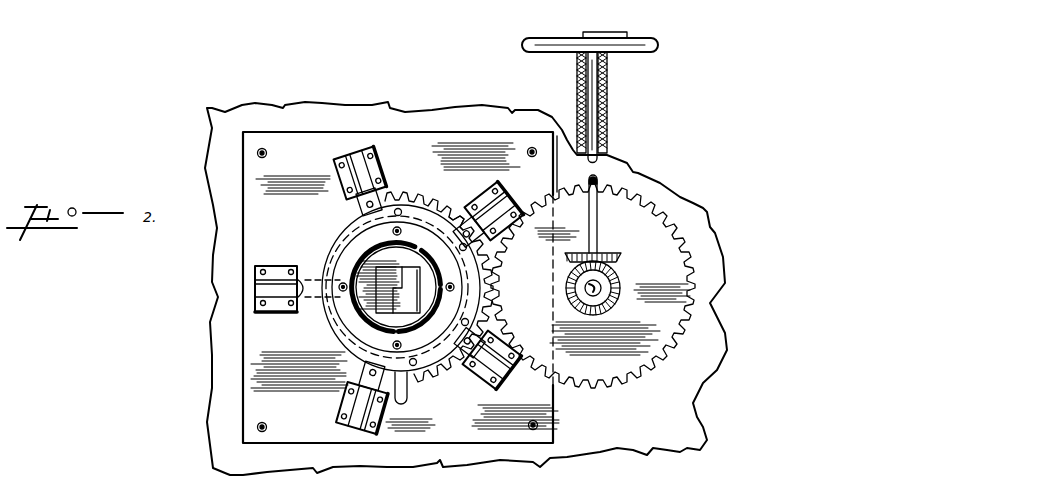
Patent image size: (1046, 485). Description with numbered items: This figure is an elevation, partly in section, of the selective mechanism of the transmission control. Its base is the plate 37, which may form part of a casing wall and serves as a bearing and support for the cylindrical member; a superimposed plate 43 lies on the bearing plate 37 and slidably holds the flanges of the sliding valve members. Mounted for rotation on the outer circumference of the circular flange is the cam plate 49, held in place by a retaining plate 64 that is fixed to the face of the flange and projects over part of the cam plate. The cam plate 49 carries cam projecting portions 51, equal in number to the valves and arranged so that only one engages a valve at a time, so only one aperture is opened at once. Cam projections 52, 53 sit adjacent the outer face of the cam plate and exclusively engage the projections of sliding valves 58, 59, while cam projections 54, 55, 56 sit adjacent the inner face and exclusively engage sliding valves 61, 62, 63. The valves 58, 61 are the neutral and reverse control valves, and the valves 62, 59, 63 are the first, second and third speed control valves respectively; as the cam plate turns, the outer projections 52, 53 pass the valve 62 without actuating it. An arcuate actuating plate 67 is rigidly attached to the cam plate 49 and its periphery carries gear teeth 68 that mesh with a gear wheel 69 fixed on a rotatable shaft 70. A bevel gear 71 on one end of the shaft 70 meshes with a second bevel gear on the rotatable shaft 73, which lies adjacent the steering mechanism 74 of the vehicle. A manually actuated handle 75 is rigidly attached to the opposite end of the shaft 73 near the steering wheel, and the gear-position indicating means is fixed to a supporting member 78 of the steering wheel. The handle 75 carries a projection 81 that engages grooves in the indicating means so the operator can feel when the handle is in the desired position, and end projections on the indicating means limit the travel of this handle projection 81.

The plate 37 is at (478, 118).
The superimposed plate 43 is at (260, 165).
The cam plate 49 is at (323, 250).
The cam projecting portions 51 is at (335, 225).
The cam projection 52 is at (330, 238).
The cam projection 53 is at (330, 348).
The cam projection 54 is at (393, 196).
The cam projection 55 is at (304, 302).
The cam projection 56 is at (407, 390).
The sliding valve 58 is at (352, 152).
The sliding valve 59 is at (370, 372).
The sliding valve 61 is at (468, 205).
The sliding valve 62 is at (300, 290).
The sliding valve 63 is at (478, 374).
The retaining plate 64 is at (363, 331).
The actuating plate 67 is at (456, 194).
The gear teeth 68 is at (440, 402).
The gear wheel 69 is at (590, 367).
The rotatable shaft 70 is at (599, 287).
The bevel gear 71 is at (567, 294).
The rotatable shaft 73 is at (598, 230).
The steering mechanism 74 is at (607, 105).
The manually actuated handle 75 is at (606, 33).
The supporting member 78 is at (607, 76).
The projection 81 is at (628, 37).